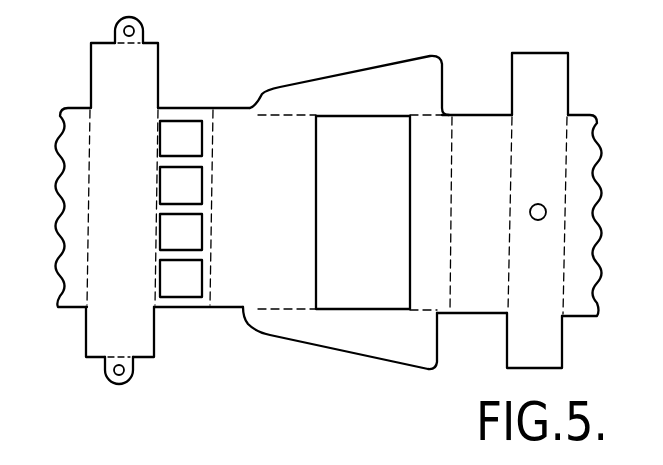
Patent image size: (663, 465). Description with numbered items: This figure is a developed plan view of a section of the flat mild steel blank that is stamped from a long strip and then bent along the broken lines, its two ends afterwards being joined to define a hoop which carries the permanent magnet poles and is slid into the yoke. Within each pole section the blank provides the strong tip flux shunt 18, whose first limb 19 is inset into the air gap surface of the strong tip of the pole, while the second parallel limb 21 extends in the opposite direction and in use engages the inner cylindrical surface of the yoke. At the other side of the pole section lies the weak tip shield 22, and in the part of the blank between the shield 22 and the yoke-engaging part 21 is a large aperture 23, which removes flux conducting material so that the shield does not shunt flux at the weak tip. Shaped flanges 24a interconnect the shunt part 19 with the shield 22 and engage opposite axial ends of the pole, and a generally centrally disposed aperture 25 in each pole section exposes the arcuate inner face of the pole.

The flux shunt 18 is at (478, 115).
The first limb 19 is at (427, 257).
The second parallel limb 21 is at (107, 80).
The weak tip shield 22 is at (229, 157).
The aperture 23 is at (182, 188).
The shaped flanges 24a is at (374, 98).
The aperture 25 is at (345, 229).